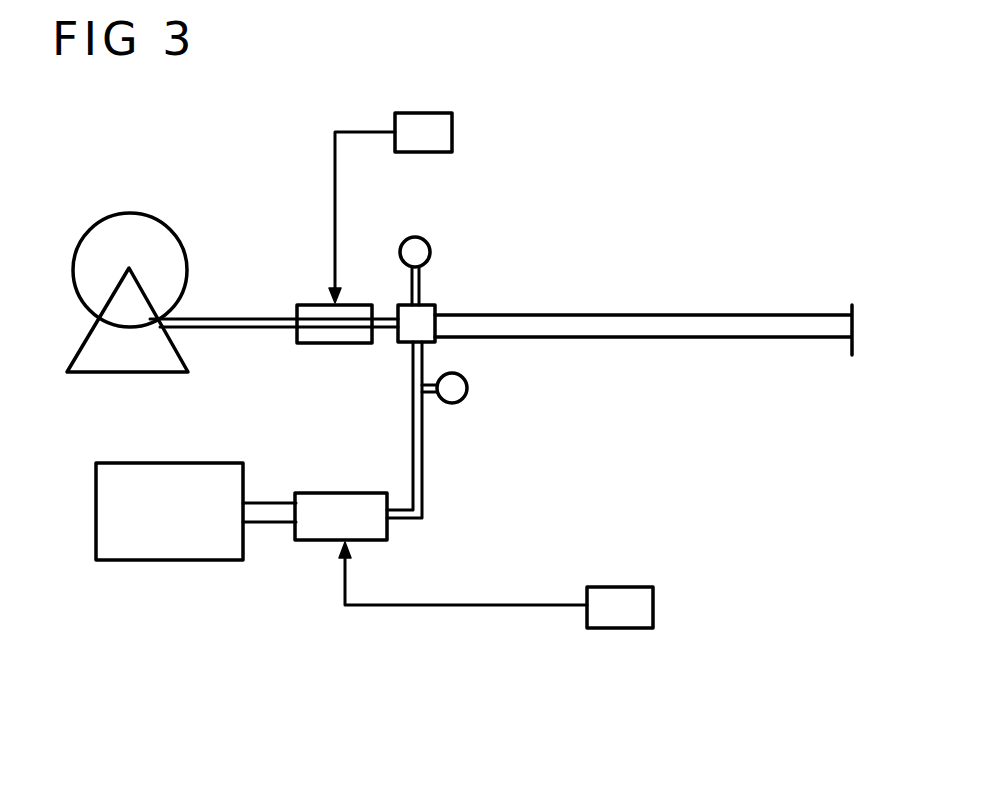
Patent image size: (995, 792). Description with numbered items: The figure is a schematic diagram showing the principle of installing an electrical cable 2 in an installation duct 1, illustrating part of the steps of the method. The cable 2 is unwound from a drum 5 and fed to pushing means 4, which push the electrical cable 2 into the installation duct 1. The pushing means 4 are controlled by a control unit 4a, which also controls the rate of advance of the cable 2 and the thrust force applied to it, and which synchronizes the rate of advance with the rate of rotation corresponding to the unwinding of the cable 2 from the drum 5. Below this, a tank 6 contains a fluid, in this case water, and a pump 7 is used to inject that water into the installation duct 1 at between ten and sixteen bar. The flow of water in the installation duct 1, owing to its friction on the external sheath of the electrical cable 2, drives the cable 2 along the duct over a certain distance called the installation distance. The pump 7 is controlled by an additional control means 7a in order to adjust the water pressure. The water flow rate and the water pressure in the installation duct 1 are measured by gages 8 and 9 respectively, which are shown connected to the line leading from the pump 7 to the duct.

The installation duct 1 is at (638, 337).
The electrical cable 2 is at (250, 330).
The pushing means 4 is at (358, 350).
The control unit 4a is at (428, 125).
The drum 5 is at (107, 198).
The tank 6 is at (175, 561).
The pump 7 is at (318, 543).
The additional control means 7a is at (610, 631).
The gage 8 is at (468, 398).
The gage 9 is at (430, 247).